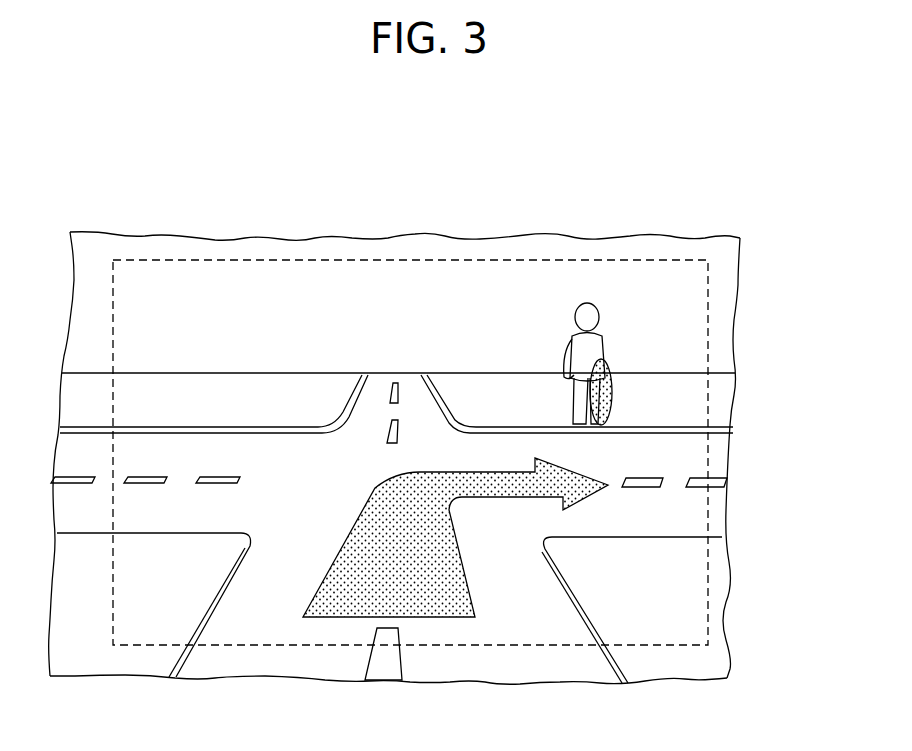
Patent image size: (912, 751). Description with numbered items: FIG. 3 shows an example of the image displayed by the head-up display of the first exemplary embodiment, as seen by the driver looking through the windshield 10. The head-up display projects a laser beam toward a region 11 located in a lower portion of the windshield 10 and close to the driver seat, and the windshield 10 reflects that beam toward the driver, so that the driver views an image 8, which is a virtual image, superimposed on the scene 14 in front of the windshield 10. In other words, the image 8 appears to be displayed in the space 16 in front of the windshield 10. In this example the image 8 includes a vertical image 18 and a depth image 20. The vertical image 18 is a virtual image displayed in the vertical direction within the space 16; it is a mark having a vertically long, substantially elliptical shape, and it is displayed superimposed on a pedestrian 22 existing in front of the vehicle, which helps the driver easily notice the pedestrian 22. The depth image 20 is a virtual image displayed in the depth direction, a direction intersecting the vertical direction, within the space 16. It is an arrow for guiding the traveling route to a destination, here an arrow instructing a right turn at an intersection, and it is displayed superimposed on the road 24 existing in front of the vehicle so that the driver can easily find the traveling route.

The image 8 is at (796, 348).
The windshield 10 is at (90, 276).
The region 11 is at (708, 298).
The scene 14 is at (263, 297).
The space 16 is at (412, 325).
The vertical image 18 is at (612, 388).
The depth image 20 is at (548, 474).
The pedestrian 22 is at (587, 303).
The road 24 is at (557, 595).